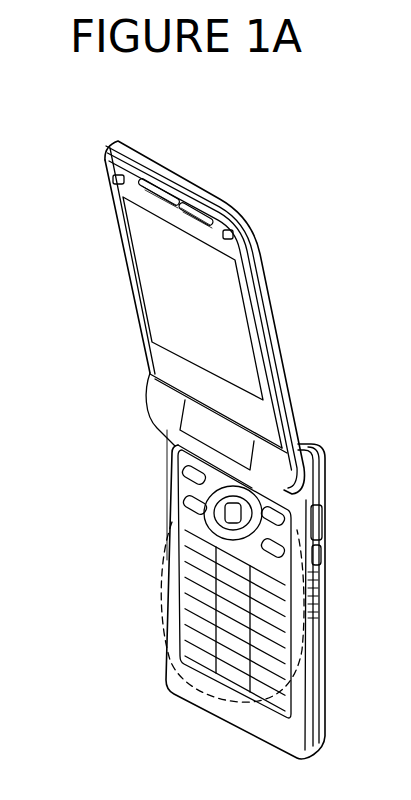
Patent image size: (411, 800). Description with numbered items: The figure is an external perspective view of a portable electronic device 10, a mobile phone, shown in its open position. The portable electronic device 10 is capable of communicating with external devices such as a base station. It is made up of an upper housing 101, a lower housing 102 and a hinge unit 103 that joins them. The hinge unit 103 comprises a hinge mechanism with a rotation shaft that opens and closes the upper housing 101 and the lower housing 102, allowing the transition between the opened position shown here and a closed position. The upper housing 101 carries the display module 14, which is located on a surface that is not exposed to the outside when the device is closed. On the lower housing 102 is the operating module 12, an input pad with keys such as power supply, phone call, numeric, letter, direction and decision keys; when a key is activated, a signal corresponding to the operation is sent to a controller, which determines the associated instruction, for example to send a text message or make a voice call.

The portable electronic device 10 is at (278, 194).
The upper housing 101 is at (120, 240).
The lower housing 102 is at (297, 679).
The hinge unit 103 is at (197, 428).
The operating module 12 is at (160, 568).
The display module 14 is at (172, 300).